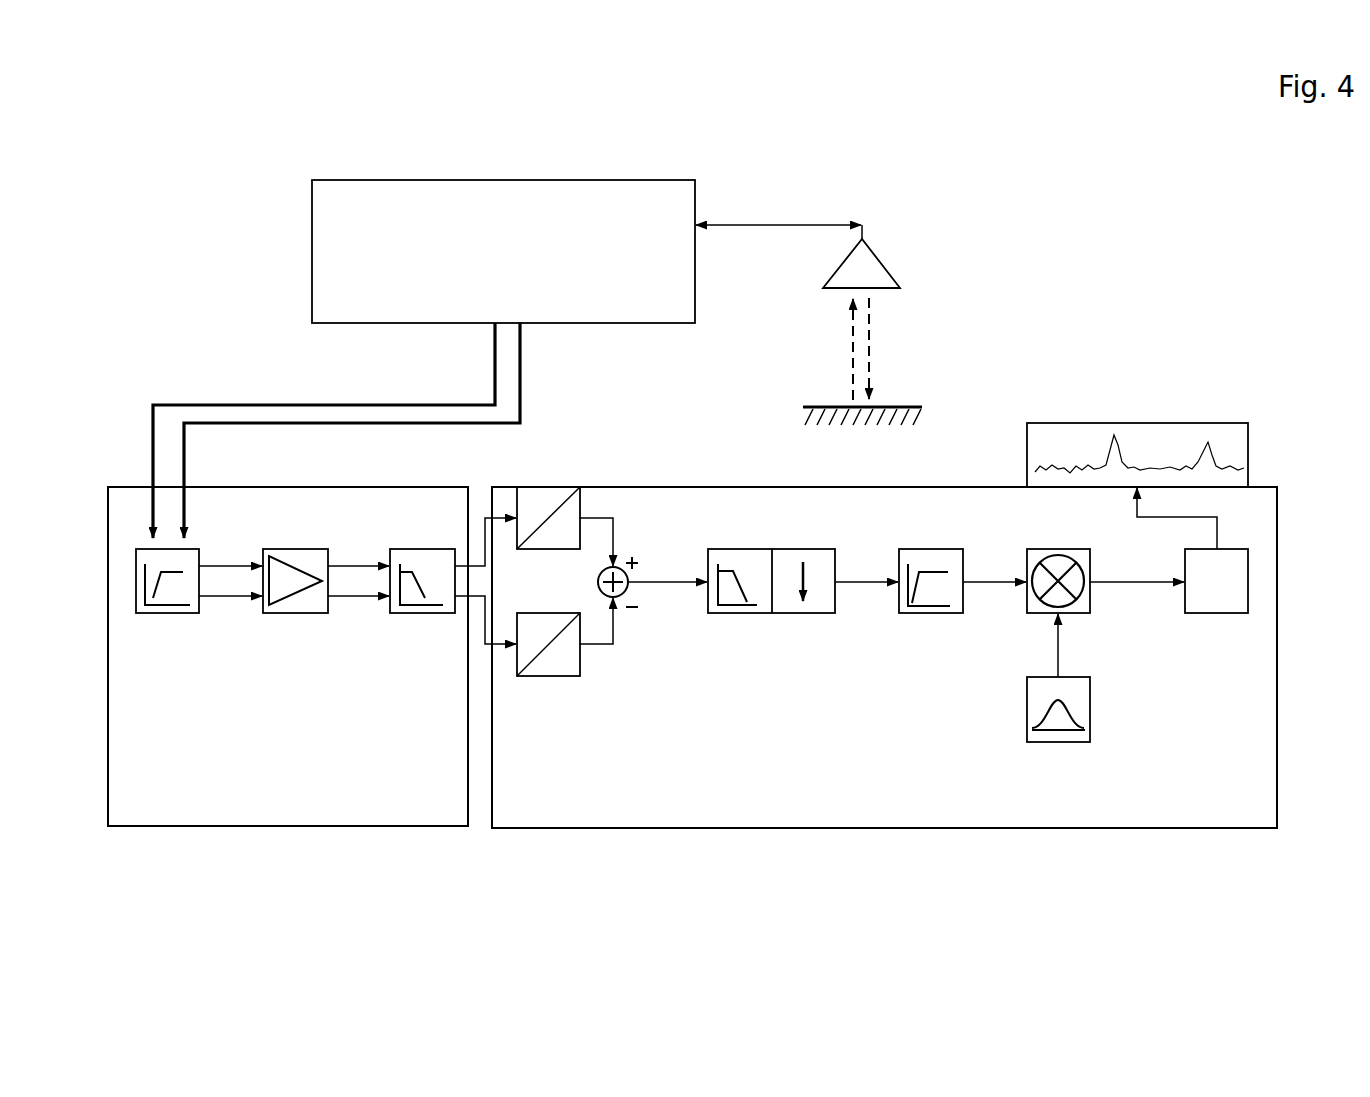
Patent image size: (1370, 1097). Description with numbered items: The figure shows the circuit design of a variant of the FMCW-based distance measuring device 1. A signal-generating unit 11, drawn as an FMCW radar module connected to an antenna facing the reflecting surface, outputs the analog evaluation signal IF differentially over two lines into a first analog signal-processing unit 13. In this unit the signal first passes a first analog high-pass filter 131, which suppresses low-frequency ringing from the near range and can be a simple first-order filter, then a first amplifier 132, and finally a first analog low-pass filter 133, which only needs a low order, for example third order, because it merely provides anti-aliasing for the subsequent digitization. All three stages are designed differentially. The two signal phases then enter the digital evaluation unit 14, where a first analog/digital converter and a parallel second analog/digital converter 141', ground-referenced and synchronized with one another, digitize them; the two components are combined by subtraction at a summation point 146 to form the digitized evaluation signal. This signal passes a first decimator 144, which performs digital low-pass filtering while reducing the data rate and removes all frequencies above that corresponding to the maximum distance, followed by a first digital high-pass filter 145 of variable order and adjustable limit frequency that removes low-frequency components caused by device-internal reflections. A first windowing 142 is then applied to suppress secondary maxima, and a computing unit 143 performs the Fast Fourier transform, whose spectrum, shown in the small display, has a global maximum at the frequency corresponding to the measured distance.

The distance measuring device 1 is at (176, 195).
The signal-generating unit 11 is at (436, 178).
The first analog signal-processing unit 13 is at (422, 826).
The first analog high-pass filter 131 is at (177, 613).
The first amplifier 132 is at (311, 613).
The first analog low-pass filter 133 is at (435, 613).
The digital evaluation unit 14 is at (885, 828).
The second analog/digital converter 141' is at (544, 635).
The summation point 146 is at (629, 592).
The first decimator 144 is at (763, 613).
The first digital high-pass filter 145 is at (945, 613).
The first windowing 142 is at (1030, 613).
The computing unit 143 is at (1208, 613).